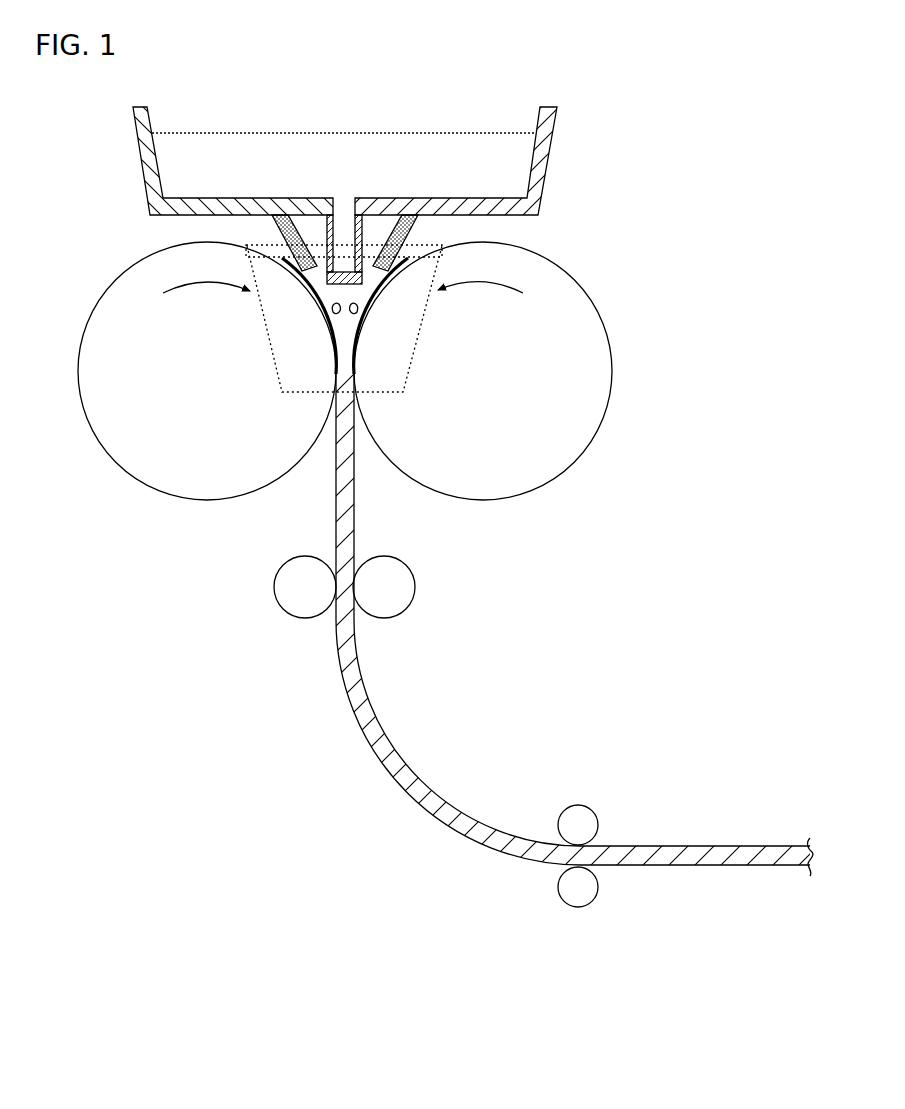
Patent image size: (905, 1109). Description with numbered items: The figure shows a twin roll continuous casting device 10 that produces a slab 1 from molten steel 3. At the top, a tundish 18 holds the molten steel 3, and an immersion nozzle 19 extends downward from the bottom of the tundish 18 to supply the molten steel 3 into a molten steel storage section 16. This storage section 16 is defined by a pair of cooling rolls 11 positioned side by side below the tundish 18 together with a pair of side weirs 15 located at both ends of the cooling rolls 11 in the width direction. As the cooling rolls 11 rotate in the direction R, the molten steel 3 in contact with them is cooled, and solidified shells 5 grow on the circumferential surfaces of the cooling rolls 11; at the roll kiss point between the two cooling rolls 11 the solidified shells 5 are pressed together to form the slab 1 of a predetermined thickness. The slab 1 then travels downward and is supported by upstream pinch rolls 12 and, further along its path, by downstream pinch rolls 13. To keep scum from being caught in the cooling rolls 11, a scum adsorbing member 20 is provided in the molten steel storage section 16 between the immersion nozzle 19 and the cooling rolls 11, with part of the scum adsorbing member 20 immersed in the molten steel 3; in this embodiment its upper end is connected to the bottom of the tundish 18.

The slab 1 is at (380, 758).
The molten steel 3 is at (342, 292).
The solidified shell 5 is at (333, 312).
The twin roll continuous casting device 10 is at (158, 757).
The cooling roll 11 is at (78, 368).
The upstream pinch roll 12 is at (274, 587).
The downstream pinch roll 13 is at (577, 810).
The side weir 15 is at (420, 340).
The molten steel storage section 16 is at (280, 249).
The tundish 18 is at (550, 143).
The immersion nozzle 19 is at (360, 227).
The scum adsorbing member 20 is at (293, 230).
The rotation direction R is at (343, 272).